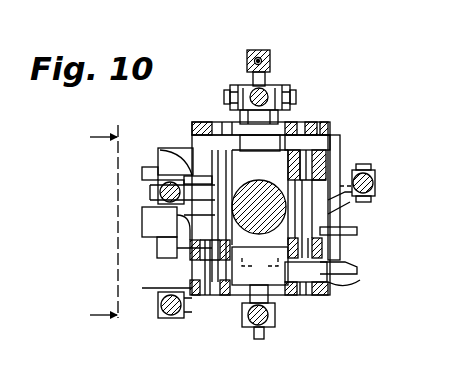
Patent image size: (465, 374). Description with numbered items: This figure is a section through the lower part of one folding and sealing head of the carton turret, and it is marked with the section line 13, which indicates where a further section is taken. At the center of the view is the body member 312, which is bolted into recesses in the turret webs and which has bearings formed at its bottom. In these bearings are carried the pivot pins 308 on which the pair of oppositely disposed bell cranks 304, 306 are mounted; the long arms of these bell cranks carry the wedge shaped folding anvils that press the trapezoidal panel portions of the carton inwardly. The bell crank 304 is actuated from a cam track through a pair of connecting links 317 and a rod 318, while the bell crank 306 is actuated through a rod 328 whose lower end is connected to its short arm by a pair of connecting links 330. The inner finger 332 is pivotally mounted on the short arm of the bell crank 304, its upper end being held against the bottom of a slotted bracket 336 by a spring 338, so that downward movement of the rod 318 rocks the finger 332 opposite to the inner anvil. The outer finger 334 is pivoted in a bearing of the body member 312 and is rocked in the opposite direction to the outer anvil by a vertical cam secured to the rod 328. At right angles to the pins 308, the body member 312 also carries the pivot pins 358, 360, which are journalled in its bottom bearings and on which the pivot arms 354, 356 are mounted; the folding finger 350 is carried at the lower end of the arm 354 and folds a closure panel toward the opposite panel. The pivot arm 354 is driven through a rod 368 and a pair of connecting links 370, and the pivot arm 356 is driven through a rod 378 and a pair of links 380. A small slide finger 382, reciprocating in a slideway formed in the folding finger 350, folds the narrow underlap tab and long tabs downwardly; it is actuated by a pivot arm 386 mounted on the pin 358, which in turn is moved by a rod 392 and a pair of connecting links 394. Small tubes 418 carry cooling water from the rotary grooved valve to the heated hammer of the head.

The section line 13— 13 is at (78, 225).
The bell crank 304 is at (248, 132).
The bell crank 306 is at (290, 292).
The pivot pins 308 is at (320, 141).
The body member 312 is at (193, 128).
The connecting links 317 is at (243, 88).
The rod 318 is at (293, 95).
The rod 328 is at (276, 317).
The connecting links 330 is at (249, 325).
The inner finger 332 is at (267, 78).
The outer finger 334 is at (262, 339).
The slotted bracket 336 is at (272, 62).
The spring 338 is at (259, 52).
The folding finger 350 is at (150, 251).
The pivot arm 354 is at (186, 166).
The pivot arm 356 is at (372, 231).
The pivot pin 358 is at (188, 280).
The pivot pin 360 is at (330, 160).
The rod 368 is at (160, 194).
The connecting links 370 is at (158, 174).
The rod 378 is at (377, 185).
The links 380 is at (372, 176).
The slide finger 382 is at (142, 230).
The pivot arm 386 is at (188, 318).
The rod 392 is at (165, 322).
The connecting links 394 is at (142, 289).
The tubes 418 is at (360, 250).